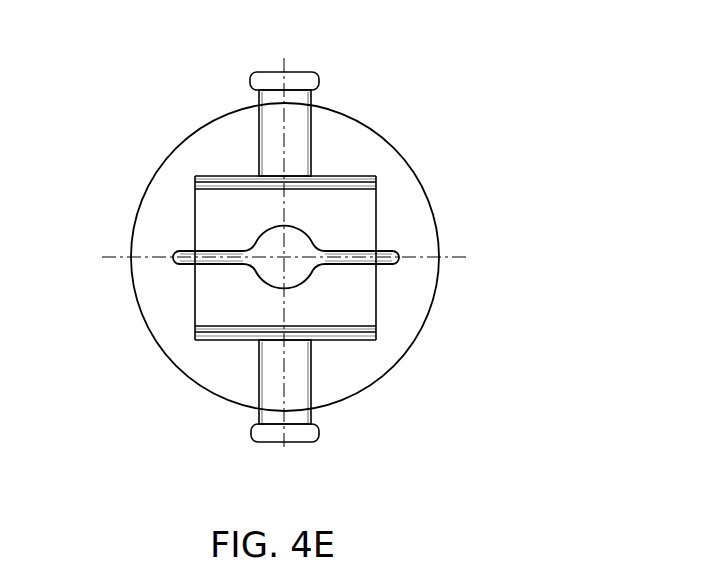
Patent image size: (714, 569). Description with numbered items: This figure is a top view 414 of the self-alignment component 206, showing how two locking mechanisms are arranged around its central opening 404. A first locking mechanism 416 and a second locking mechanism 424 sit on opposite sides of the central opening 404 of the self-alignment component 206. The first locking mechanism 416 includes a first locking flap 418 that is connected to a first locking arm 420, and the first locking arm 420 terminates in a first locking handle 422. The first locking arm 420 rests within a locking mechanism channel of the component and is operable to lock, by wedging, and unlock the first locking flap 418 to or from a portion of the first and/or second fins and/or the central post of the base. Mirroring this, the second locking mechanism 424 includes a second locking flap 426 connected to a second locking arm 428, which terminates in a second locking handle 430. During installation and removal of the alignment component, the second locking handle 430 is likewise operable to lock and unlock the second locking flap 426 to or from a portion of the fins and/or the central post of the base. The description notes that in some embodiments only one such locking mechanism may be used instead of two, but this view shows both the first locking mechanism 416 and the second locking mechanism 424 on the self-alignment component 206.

The self-alignment component 206 is at (137, 295).
The central opening 404 is at (289, 255).
The top view 414 is at (483, 54).
The first locking mechanism 416 is at (336, 171).
The first locking flap 418 is at (206, 217).
The first locking arm 420 is at (270, 146).
The first locking handle 422 is at (274, 70).
The second locking mechanism 424 is at (344, 346).
The second locking flap 426 is at (213, 307).
The second locking arm 428 is at (260, 380).
The second locking handle 430 is at (253, 432).